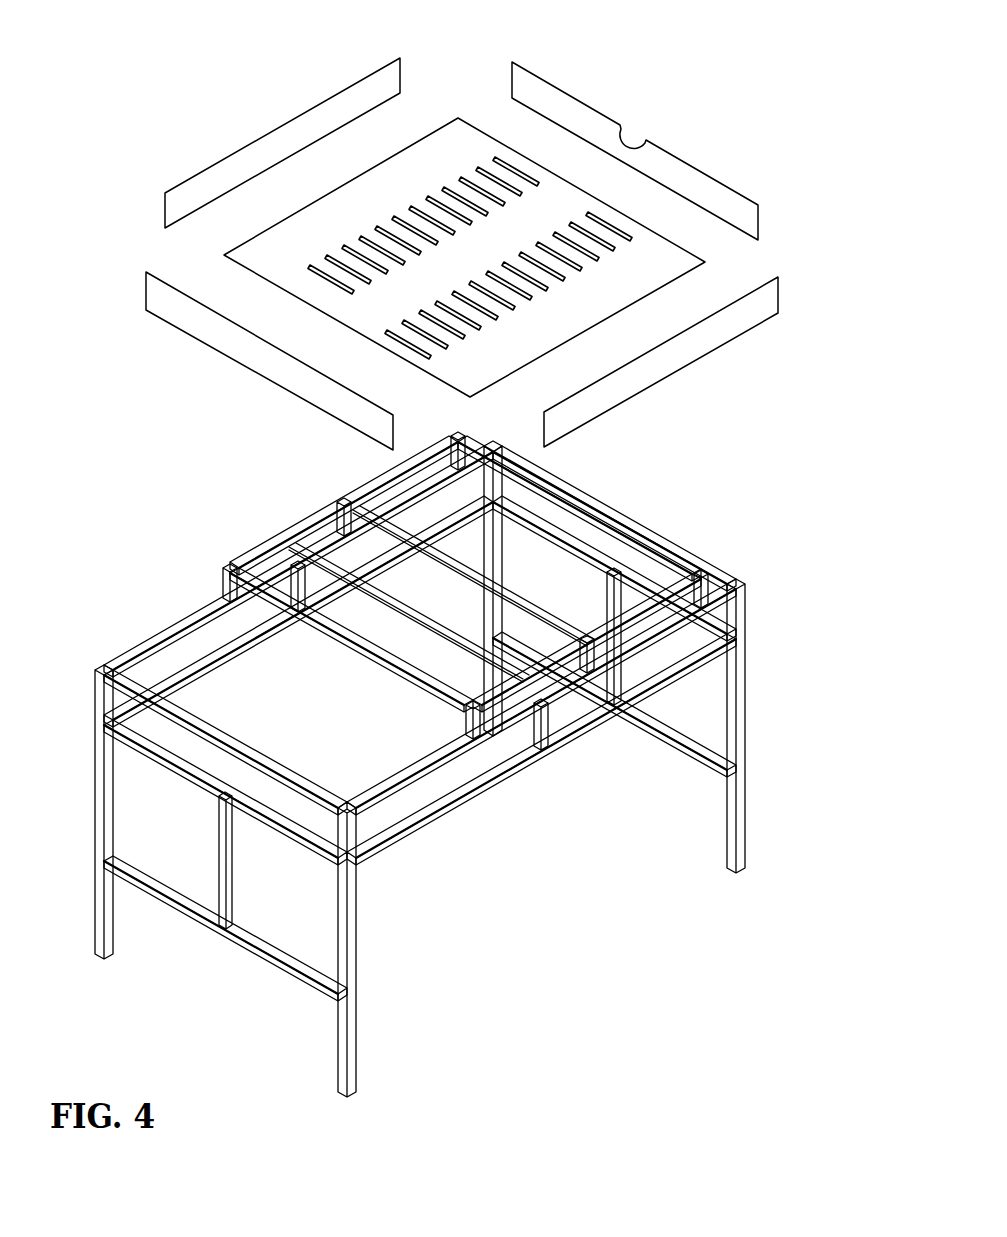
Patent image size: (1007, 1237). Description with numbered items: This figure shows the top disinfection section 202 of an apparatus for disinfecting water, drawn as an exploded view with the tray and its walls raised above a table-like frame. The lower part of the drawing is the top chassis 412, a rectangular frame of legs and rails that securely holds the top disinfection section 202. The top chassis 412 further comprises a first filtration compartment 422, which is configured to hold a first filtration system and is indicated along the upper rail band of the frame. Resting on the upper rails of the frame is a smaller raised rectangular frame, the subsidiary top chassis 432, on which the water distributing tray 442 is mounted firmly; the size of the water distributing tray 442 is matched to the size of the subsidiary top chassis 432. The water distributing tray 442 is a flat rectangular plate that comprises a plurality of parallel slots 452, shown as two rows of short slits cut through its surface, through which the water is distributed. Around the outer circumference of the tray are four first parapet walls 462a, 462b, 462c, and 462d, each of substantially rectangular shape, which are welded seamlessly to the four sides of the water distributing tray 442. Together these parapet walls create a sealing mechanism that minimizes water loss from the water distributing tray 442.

The top disinfection section 202 is at (443, 774).
The top chassis 412 is at (742, 690).
The first filtration compartment 422 is at (90, 672).
The subsidiary top chassis 432 is at (217, 565).
The water distributing tray 442 is at (428, 204).
The parallel slots 452 is at (297, 276).
The first parapet wall 462a is at (292, 122).
The first parapet wall 462b is at (594, 108).
The first parapet wall 462c is at (175, 327).
The first parapet wall 462d is at (762, 321).